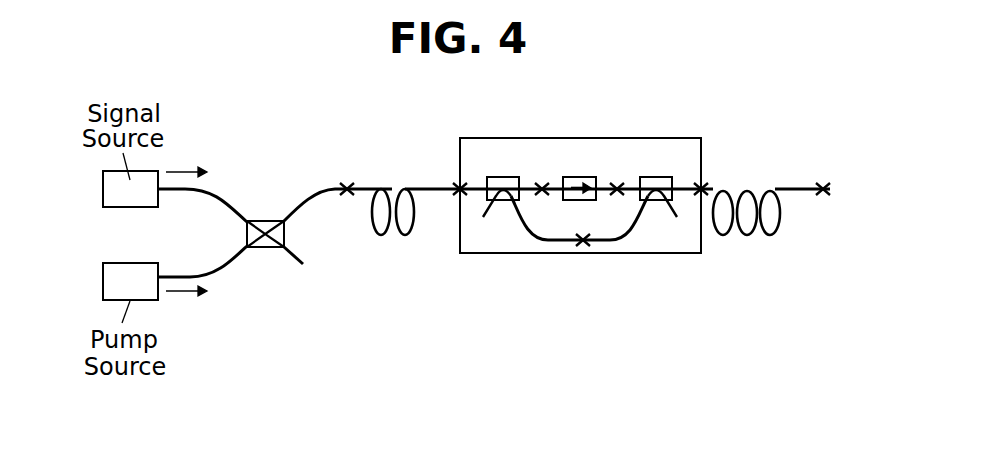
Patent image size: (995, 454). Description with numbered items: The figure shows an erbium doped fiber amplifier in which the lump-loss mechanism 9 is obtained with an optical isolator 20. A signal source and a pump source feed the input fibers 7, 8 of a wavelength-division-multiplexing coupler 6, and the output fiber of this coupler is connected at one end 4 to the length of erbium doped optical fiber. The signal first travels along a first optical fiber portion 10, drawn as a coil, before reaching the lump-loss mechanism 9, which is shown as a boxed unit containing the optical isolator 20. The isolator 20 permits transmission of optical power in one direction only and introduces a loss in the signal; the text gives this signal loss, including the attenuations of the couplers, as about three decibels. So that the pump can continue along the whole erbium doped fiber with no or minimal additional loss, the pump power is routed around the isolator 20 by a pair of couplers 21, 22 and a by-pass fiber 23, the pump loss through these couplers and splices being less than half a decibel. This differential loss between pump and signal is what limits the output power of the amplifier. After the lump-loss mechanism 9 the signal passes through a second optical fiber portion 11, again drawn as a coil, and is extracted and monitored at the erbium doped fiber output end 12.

The end 4 is at (346, 183).
The wavelength-division-multiplexing coupler 6 is at (264, 251).
The input fiber 7 is at (206, 191).
The input fiber 8 is at (207, 272).
The lump-loss mechanism 9 is at (673, 277).
The first optical fiber portion 10 is at (381, 232).
The second optical fiber portion 11 is at (769, 233).
The erbium doped fiber output end 12 is at (828, 184).
The optical isolator 20 is at (590, 177).
The coupler 21 is at (503, 177).
The coupler 22 is at (664, 177).
The by-pass fiber 23 is at (558, 243).